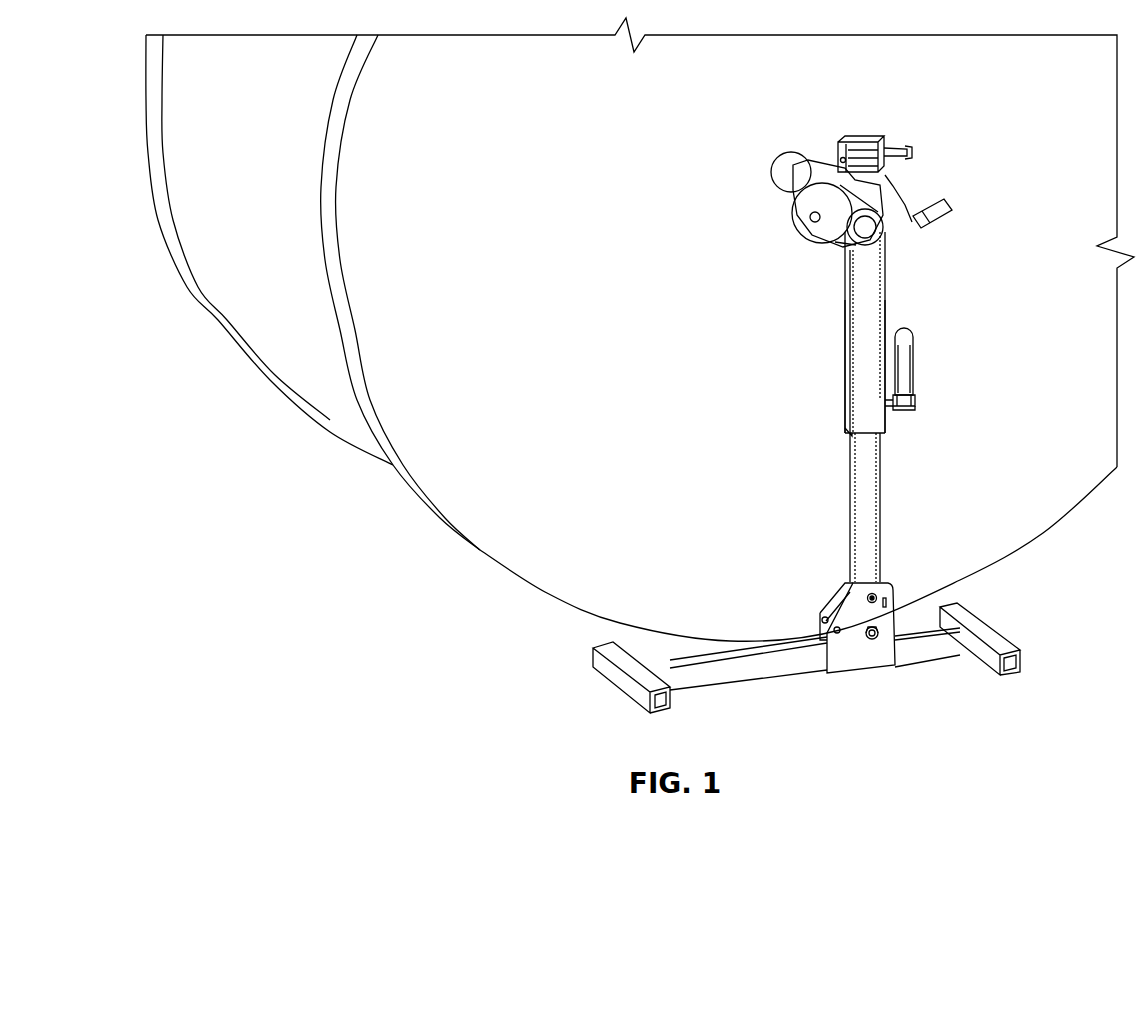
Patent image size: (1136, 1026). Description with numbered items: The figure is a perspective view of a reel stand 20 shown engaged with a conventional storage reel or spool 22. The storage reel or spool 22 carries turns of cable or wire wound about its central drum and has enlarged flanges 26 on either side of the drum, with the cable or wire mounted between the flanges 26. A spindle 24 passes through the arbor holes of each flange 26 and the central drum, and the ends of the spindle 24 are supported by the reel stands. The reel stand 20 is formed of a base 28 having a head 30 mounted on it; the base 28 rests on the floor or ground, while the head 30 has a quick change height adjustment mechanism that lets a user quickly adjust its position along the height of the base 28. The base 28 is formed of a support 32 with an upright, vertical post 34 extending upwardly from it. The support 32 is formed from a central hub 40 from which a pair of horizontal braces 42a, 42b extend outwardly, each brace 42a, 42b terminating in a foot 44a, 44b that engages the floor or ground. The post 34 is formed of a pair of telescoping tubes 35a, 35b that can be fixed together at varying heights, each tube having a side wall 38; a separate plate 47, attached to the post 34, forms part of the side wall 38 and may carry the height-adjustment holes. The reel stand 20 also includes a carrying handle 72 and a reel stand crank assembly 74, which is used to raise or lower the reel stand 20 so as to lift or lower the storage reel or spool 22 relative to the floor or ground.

The reel stand 20 is at (840, 421).
The storage reel or spool 22 is at (478, 558).
The spindle 24 is at (775, 165).
The flange 26 is at (335, 439).
The base 28 is at (815, 691).
The head 30 is at (817, 248).
The support 32 is at (1010, 610).
The post 34 is at (850, 380).
The telescoping tube 35a is at (880, 520).
The telescoping tube 35b is at (875, 430).
The side wall 38 is at (878, 270).
The central hub 40 is at (870, 660).
The horizontal brace 42a is at (735, 680).
The horizontal brace 42b is at (950, 655).
The foot 44a is at (615, 685).
The foot 44b is at (1020, 660).
The plate 47 is at (886, 302).
The carrying handle 72 is at (908, 368).
The reel stand crank assembly 74 is at (881, 131).